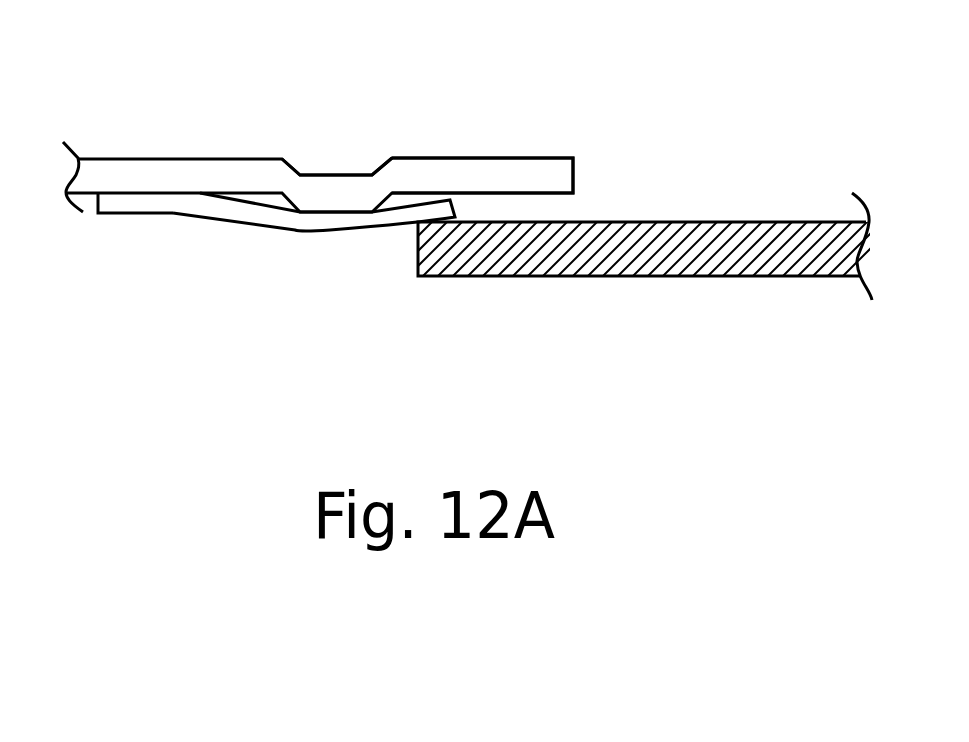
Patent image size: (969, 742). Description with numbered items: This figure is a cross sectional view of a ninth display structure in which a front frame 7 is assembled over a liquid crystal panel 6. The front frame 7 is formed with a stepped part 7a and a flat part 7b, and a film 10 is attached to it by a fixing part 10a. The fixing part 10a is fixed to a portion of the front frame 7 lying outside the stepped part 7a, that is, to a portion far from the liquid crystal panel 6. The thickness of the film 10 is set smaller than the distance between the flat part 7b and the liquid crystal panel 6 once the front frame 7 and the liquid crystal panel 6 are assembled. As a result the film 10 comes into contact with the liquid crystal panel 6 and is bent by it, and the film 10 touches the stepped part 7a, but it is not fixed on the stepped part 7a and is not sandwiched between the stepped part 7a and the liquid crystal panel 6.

The liquid crystal panel 6 is at (737, 220).
The front frame 7 is at (142, 175).
The stepped part 7a is at (320, 175).
The flat part 7b is at (457, 157).
The film 10 is at (270, 215).
The fixing part 10a is at (165, 213).